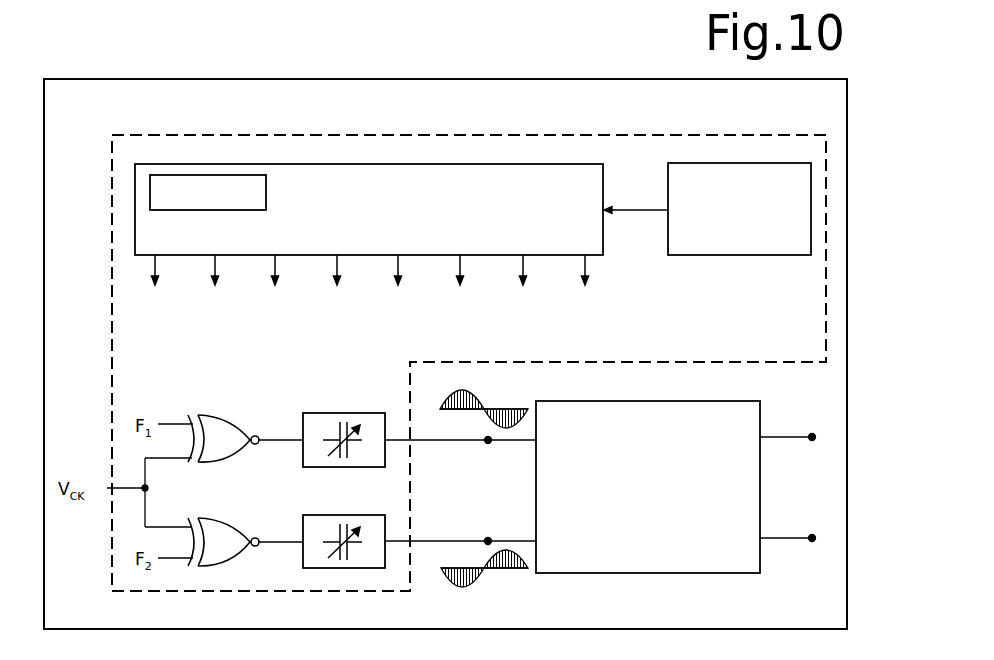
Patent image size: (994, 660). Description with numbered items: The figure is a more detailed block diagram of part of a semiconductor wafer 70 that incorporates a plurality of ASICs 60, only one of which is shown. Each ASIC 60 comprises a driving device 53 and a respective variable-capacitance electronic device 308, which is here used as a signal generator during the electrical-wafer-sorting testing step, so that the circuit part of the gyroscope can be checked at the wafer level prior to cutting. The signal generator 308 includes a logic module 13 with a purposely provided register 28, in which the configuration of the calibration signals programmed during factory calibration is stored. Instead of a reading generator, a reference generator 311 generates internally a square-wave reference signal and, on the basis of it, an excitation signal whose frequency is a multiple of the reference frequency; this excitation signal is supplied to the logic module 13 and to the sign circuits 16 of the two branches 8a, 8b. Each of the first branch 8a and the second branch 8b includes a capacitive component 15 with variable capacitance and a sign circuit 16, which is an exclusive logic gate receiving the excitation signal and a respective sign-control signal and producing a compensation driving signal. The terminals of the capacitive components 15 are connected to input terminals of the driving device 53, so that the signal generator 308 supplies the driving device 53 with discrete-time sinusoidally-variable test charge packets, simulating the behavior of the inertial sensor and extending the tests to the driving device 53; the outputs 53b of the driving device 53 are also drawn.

The wafer 70 is at (567, 79).
The variable-capacitance electronic device 308 is at (762, 364).
The logic module 13 is at (385, 164).
The register 28 is at (203, 175).
The reference generator 311 is at (712, 255).
The sign circuit 16 is at (213, 416).
The first branch 8a is at (266, 403).
The second branch 8b is at (288, 562).
The capacitive component 15 is at (348, 413).
The ASIC 60 is at (488, 443).
The driving device 53 is at (646, 573).
The driving outputs 53b is at (812, 440).